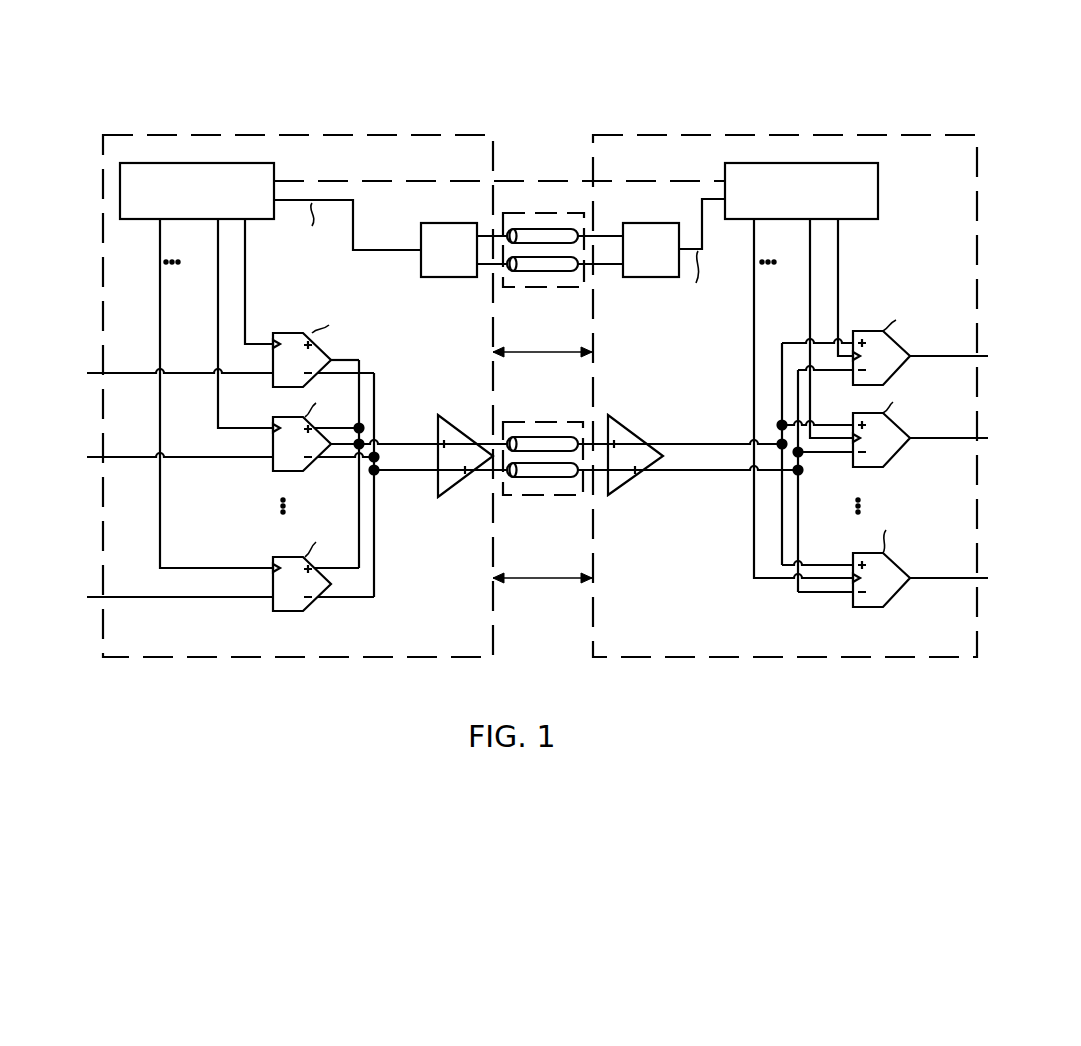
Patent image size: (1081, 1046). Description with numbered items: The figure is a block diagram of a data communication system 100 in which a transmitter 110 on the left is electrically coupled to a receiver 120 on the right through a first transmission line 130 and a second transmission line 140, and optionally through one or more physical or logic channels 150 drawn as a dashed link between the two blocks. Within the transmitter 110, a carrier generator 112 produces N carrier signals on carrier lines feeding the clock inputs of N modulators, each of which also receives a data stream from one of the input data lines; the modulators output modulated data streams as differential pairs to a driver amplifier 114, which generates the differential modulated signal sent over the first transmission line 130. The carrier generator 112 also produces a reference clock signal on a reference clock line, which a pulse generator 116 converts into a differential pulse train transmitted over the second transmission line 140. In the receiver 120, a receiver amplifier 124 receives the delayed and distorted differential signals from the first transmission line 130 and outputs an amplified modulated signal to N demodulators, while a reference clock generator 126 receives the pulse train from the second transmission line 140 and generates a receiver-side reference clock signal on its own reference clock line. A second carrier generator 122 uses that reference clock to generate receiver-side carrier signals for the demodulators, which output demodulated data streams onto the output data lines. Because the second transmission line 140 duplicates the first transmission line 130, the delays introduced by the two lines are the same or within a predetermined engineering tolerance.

The data communication system 100 is at (168, 98).
The transmitter 110 is at (467, 135).
The carrier generator 112 is at (274, 171).
The driver amplifier 114 is at (440, 497).
The pulse generator 116 is at (436, 262).
The receiver 120 is at (945, 135).
The carrier generator 122 is at (802, 163).
The receiver amplifier 124 is at (620, 490).
The reference clock generator 126 is at (638, 262).
The first transmission line 130 is at (533, 495).
The second transmission line 140 is at (533, 288).
The physical or logic channels 150 is at (513, 181).